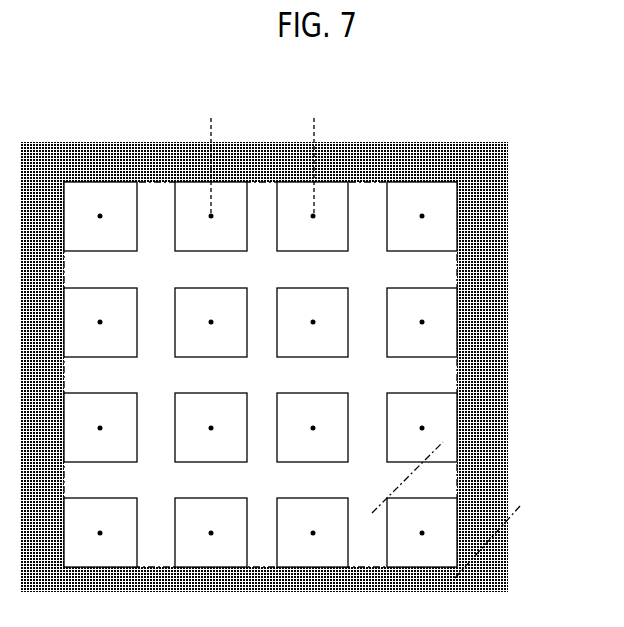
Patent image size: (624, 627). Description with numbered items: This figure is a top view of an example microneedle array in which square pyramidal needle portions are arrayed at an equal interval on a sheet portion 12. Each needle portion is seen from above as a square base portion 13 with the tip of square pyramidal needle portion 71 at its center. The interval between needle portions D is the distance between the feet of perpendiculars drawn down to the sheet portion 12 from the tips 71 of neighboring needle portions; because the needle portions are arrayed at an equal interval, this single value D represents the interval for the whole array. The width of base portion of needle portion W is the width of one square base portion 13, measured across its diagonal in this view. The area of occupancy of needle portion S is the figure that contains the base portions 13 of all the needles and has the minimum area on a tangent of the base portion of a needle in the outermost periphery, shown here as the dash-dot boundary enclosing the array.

The sheet portion 12 is at (478, 379).
The base portion 13 is at (447, 238).
The tip of square pyramidal needle portion 71 is at (422, 216).
The area of occupancy of needle portion S is at (408, 379).
The width of base portion of needle portion W is at (421, 471).
The interval between needle portions D is at (313, 137).